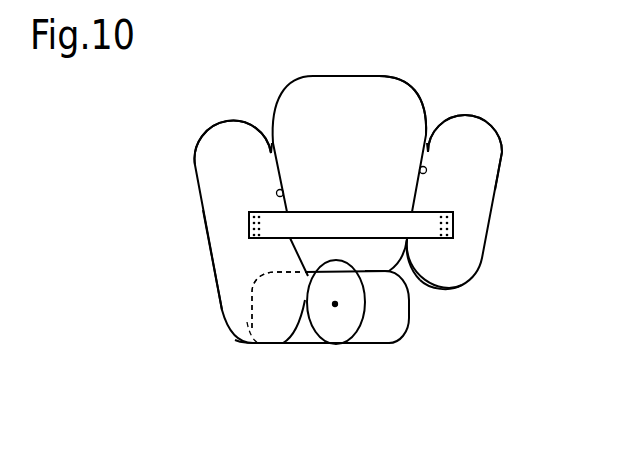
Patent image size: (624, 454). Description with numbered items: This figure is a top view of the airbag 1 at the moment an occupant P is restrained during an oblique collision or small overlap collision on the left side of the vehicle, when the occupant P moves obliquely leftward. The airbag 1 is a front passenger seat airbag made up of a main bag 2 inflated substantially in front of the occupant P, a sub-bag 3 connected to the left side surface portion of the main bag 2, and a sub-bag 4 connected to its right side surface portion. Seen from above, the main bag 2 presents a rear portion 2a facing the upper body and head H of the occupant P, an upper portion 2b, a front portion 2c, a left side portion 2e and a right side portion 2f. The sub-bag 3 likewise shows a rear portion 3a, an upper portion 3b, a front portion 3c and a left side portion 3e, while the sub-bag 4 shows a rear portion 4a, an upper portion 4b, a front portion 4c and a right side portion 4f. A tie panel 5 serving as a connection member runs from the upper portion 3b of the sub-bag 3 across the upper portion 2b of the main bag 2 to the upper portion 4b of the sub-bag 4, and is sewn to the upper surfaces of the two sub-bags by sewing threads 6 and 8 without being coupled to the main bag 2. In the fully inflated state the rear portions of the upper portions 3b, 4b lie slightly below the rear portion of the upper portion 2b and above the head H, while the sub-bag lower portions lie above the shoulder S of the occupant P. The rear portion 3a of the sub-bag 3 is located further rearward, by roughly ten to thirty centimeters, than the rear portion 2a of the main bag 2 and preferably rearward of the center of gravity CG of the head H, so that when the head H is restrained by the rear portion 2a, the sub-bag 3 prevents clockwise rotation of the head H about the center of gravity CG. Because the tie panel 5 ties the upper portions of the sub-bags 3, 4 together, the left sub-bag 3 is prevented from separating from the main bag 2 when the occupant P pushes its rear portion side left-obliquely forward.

The airbag 1 is at (445, 82).
The main bag 2 is at (340, 100).
The rear portion of the main bag 2a is at (370, 273).
The upper portion of the main bag 2b is at (332, 157).
The front portion of the main bag 2c is at (382, 77).
The left side portion of the main bag 2e is at (284, 192).
The right side portion of the main bag 2f is at (423, 166).
The sub-bag 3 is at (193, 202).
The rear portion of the sub-bag 3a is at (263, 345).
The upper portion of the sub-bag 3b is at (248, 280).
The front portion of the sub-bag 3c is at (230, 120).
The left side portion of the sub-bag 3e is at (210, 242).
The sub-bag 4 is at (500, 193).
The rear portion of the sub-bag 4a is at (442, 289).
The upper portion of the sub-bag 4b is at (463, 236).
The front portion of the sub-bag 4c is at (475, 117).
The right side portion of the sub-bag 4f is at (505, 162).
The tie panel 5 is at (384, 220).
The sewing thread 6 is at (243, 208).
The sewing thread 8 is at (455, 220).
The center of gravity CG is at (331, 304).
The head H is at (352, 315).
The occupant P is at (335, 355).
The shoulder S is at (247, 320).